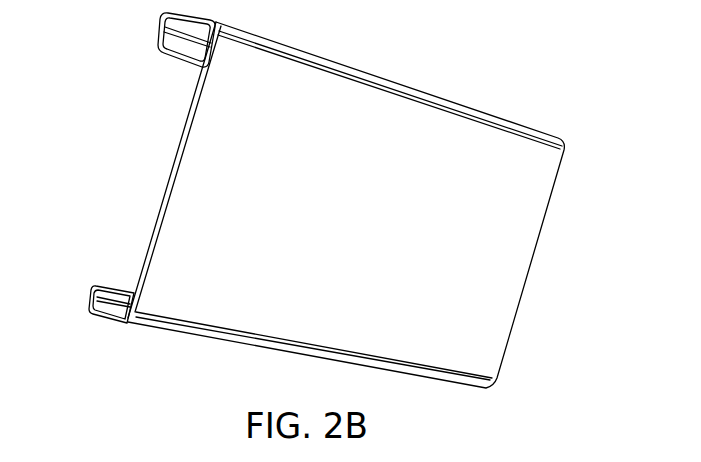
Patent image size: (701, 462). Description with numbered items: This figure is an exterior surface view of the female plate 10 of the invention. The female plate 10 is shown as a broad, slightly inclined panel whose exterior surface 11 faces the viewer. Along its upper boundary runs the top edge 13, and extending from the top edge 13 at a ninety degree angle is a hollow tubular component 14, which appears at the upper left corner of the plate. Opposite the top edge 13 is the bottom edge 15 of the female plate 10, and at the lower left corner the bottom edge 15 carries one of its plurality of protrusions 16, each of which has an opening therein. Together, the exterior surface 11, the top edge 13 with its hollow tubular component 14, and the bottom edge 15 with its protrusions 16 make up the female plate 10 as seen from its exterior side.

The female plate 10 is at (73, 163).
The exterior surface 11 is at (328, 102).
The top edge 13 is at (478, 115).
The hollow tubular component 14 is at (157, 28).
The bottom edge 15 is at (190, 333).
The protrusions 16 is at (93, 308).